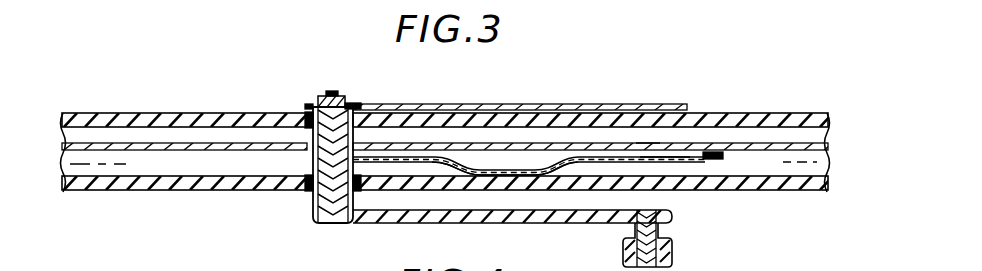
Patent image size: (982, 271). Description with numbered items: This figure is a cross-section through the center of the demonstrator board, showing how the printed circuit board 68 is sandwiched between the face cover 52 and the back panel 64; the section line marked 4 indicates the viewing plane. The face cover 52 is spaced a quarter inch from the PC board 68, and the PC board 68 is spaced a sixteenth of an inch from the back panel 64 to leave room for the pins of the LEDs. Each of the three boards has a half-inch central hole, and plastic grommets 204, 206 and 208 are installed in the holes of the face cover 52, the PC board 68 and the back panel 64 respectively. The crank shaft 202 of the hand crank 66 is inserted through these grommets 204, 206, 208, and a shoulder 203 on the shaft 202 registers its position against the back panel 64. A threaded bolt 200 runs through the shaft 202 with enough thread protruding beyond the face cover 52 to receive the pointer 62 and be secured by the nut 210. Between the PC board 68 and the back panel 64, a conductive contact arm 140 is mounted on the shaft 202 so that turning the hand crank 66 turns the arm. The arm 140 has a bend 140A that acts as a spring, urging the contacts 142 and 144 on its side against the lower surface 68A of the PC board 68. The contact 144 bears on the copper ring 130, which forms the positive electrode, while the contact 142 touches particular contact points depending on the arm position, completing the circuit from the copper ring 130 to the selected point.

The face cover 52 is at (196, 97).
The back panel 64 is at (206, 190).
The plastic grommet 204 is at (307, 142).
The crank shaft 202 is at (312, 124).
The plastic grommet 208 is at (312, 191).
The shoulder 203 is at (353, 224).
The threaded bolt 200 is at (335, 92).
The nut 210 is at (348, 103).
The pointer 62 is at (557, 112).
The plastic grommet 206 is at (368, 145).
The PC board 68 is at (484, 108).
The hand crank 66 is at (528, 223).
The contact arm 140 is at (676, 166).
The bend 140A is at (546, 162).
The contact 142 is at (668, 153).
The contact 144 is at (717, 152).
The copper ring 130 is at (640, 143).
The lower surface of PC board 68A is at (735, 153).
The section line 4- 4 is at (42, 164).